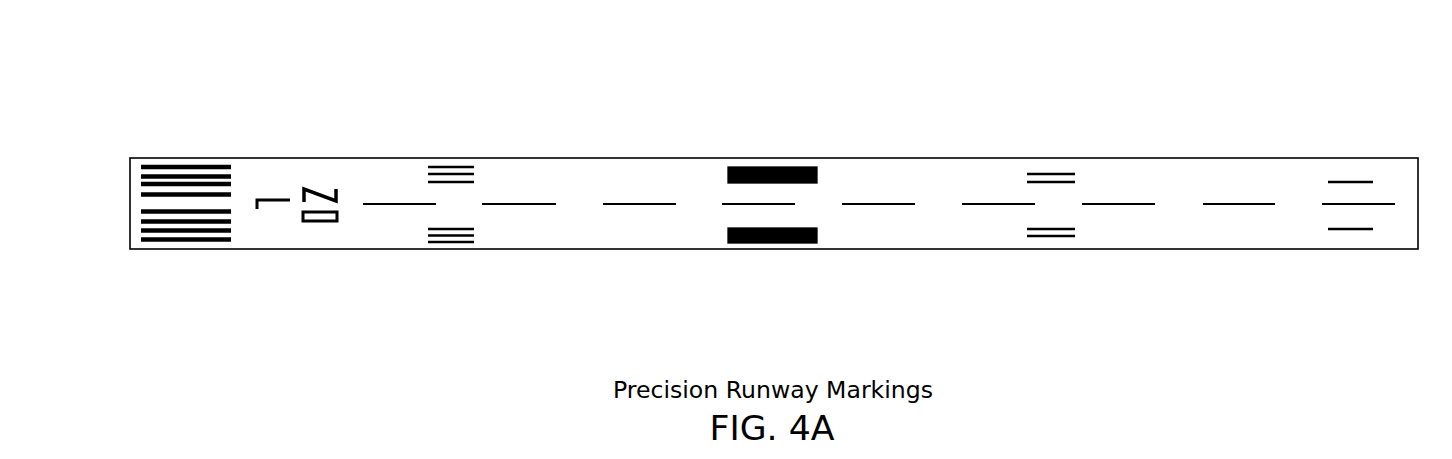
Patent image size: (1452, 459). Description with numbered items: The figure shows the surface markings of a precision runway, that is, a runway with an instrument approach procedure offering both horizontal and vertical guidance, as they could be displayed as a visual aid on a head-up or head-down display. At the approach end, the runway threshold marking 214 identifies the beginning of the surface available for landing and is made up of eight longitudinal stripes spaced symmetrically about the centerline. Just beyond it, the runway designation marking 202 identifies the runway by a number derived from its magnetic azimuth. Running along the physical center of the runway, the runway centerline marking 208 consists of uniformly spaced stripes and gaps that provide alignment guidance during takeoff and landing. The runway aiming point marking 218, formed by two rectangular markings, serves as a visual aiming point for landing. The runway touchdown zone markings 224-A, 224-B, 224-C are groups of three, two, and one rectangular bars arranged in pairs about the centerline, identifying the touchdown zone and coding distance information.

The runway designation marking 202 is at (293, 175).
The runway threshold marking 214 is at (178, 157).
The runway centerline marking 208 is at (518, 188).
The runway aiming point marking 218 is at (773, 157).
The runway touchdown zone marking 224-A is at (450, 257).
The runway touchdown zone marking 224-B is at (1053, 257).
The runway touchdown zone marking 224-C is at (1353, 257).